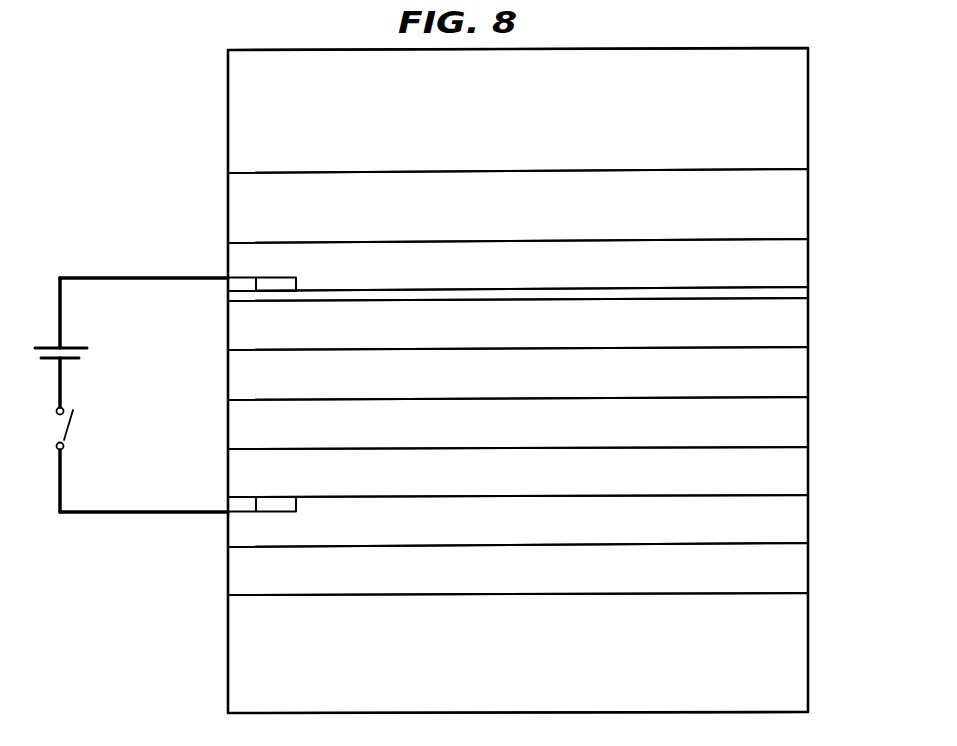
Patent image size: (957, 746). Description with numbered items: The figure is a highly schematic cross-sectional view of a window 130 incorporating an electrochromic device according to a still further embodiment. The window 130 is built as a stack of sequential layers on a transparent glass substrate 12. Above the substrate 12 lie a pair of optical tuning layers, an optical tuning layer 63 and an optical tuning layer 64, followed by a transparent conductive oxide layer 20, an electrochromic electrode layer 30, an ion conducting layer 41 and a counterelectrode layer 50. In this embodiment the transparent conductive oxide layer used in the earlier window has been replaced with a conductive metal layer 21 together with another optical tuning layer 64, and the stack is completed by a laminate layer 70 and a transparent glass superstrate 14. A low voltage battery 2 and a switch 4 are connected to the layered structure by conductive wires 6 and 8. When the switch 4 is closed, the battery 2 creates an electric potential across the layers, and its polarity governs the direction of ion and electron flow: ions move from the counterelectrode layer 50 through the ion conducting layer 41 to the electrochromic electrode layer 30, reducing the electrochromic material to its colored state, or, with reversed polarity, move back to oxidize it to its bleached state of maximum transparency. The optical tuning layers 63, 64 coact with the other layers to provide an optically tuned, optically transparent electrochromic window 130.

The window 130 is at (176, 179).
The transparent glass superstrate 14 is at (798, 96).
The laminate layer 70 is at (798, 205).
The optical tuning layer 64 is at (792, 264).
The conductive metal layer 21 is at (798, 293).
The counterelectrode layer 50 is at (803, 322).
The ion conducting layer 41 is at (803, 368).
The electrochromic electrode layer 30 is at (800, 423).
The transparent conductive oxide layer 20 is at (800, 467).
The optical tuning layer 63 is at (800, 578).
The transparent glass substrate 12 is at (800, 630).
The conductive wire 6 is at (107, 275).
The conductive wire 8 is at (127, 513).
The low voltage battery 2 is at (45, 348).
The switch 4 is at (68, 426).